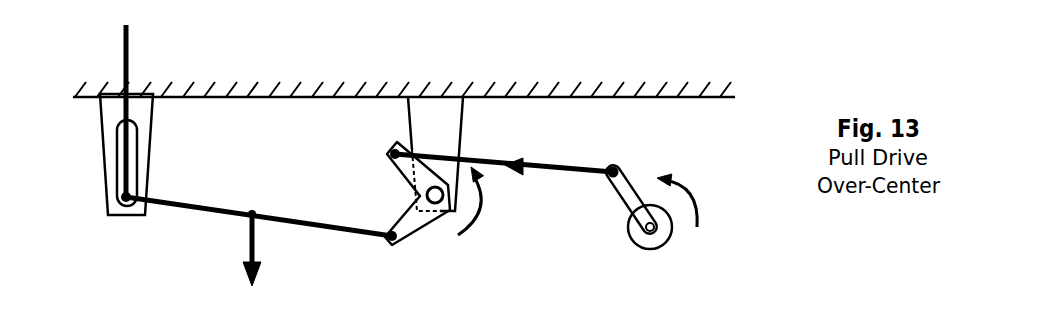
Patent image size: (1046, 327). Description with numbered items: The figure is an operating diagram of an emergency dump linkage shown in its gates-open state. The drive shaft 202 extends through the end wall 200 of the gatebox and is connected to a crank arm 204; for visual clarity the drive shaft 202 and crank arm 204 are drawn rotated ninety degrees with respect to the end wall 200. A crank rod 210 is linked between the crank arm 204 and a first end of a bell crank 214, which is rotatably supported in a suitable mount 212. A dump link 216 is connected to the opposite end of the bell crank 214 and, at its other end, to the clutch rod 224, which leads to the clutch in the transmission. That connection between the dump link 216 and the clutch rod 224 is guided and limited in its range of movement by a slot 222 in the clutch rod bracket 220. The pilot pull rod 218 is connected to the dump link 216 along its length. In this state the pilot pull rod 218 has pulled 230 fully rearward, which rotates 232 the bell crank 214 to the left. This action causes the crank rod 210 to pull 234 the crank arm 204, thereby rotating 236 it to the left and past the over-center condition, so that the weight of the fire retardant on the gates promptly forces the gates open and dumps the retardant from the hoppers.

The end wall 200 is at (689, 100).
The drive shaft 202 is at (627, 231).
The crank arm 204 is at (628, 208).
The crank rod 210 is at (588, 162).
The mount 212 is at (465, 105).
The bell crank 214 is at (387, 157).
The dump link 216 is at (280, 213).
The pilot pull rod 218 is at (248, 225).
The clutch rod bracket 220 is at (102, 124).
The slot 222 is at (117, 170).
The clutch rod 224 is at (122, 39).
The pull of the pilot pull rod 230 is at (245, 267).
The rotation of the bell crank 232 is at (480, 208).
The pull of the crank rod 234 is at (508, 158).
The rotation of the crank arm 236 is at (690, 192).